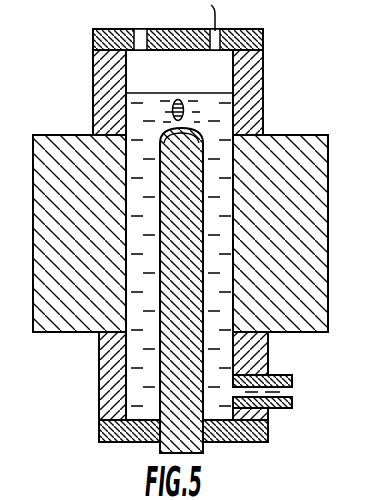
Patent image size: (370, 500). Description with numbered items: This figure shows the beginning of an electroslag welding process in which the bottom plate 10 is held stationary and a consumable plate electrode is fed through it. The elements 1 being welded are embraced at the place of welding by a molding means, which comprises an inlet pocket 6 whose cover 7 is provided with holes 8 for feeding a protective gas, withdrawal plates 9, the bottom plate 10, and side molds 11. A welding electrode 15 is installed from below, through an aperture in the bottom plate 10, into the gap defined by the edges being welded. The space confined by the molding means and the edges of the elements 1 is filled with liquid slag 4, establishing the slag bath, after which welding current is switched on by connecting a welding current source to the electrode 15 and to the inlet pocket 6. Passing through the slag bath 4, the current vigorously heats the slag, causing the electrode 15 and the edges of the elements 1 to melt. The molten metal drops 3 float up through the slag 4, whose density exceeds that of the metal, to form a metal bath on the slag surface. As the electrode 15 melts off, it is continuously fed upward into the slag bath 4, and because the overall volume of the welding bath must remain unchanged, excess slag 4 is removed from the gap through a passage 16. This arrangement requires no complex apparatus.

The elements being welded 1 is at (307, 193).
The molten metal drops 3 is at (178, 99).
The liquid slag 4 is at (223, 237).
The inlet pocket 6 is at (262, 100).
The cover 7 is at (265, 35).
The holes 8 is at (169, 416).
The withdrawal plates 9 is at (255, 360).
The bottom plate 10 is at (268, 440).
The side molds 11 is at (213, 67).
The welding electrode 15 is at (187, 288).
The passage 16 is at (293, 402).